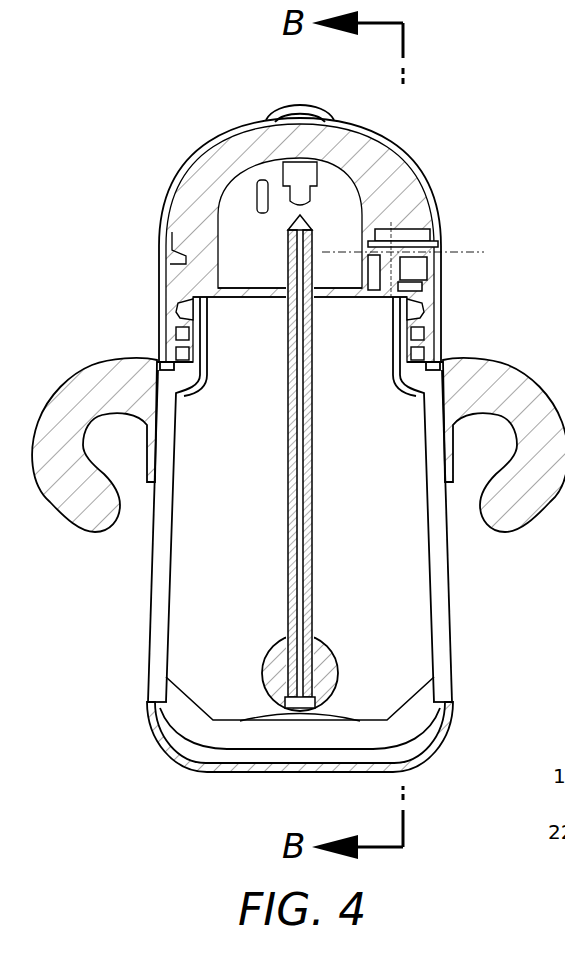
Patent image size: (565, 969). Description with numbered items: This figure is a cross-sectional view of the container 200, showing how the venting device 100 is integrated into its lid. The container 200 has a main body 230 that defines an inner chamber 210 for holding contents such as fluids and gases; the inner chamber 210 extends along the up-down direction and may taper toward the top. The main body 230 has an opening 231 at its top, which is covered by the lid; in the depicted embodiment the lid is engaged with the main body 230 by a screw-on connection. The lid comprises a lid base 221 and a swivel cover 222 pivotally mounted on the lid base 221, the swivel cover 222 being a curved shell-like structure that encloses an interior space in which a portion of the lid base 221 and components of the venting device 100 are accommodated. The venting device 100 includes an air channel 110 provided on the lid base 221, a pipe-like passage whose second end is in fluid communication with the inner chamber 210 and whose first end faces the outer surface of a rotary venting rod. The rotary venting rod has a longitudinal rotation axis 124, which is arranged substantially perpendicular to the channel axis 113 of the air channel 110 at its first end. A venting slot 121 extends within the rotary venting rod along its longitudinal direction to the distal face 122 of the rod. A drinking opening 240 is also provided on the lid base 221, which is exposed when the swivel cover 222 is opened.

The container 200 is at (157, 117).
The swivel cover 222 is at (380, 140).
The venting slot 121 is at (405, 247).
The rotation axis 124 is at (480, 252).
The venting device 100 is at (420, 278).
The air channel 110 is at (394, 286).
The lid base 221 is at (433, 324).
The distal face 122 is at (375, 250).
The channel axis 113 is at (390, 330).
The opening 231 is at (270, 335).
The inner chamber 210 is at (251, 590).
The main body 230 is at (157, 592).
The drinking opening 240 is at (310, 538).